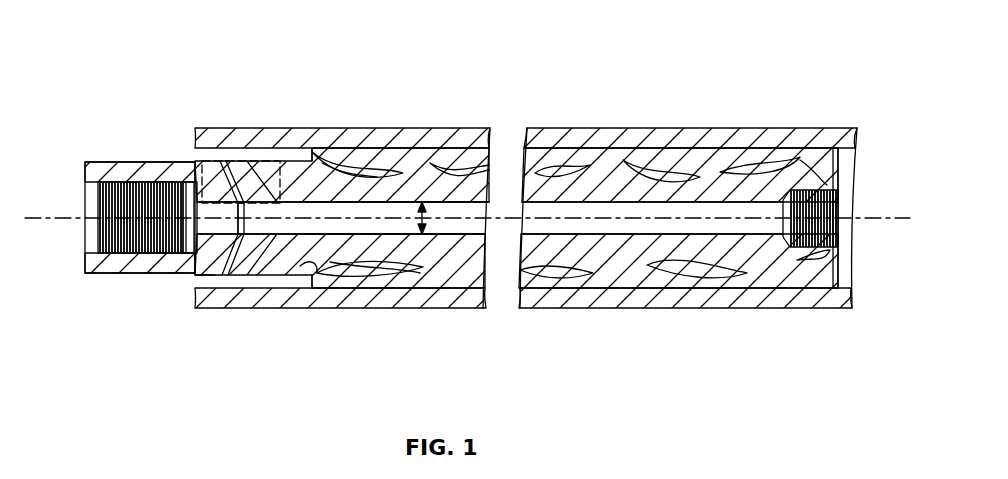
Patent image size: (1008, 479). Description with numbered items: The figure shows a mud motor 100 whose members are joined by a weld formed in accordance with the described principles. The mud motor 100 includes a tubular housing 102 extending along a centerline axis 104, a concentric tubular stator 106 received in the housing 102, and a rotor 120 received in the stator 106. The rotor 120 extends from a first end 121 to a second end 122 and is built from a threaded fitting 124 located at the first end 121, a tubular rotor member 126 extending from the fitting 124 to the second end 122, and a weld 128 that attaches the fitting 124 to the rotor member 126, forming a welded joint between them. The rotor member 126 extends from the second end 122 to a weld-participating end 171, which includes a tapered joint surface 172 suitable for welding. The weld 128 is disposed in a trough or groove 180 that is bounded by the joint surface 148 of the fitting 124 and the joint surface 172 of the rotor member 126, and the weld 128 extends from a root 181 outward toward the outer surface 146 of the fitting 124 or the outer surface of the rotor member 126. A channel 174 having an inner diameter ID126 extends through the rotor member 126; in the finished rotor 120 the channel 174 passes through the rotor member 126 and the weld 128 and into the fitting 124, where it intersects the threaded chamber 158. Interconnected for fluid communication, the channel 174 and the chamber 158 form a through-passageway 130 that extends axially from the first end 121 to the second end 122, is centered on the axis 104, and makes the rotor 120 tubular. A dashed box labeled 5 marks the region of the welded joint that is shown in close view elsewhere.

The mud motor 100 is at (118, 26).
The tubular housing 102 is at (393, 128).
The centerline axis 104 is at (712, 216).
The tubular stator 106 is at (408, 157).
The rotor 120 is at (585, 192).
The first end 121 is at (108, 162).
The second end 122 is at (826, 186).
The threaded fitting 124 is at (147, 170).
The rotor member 126 is at (653, 192).
The weld 128 is at (221, 160).
The through-passageway 130 is at (88, 238).
The outer surface 146 is at (190, 262).
The joint surface 148 is at (208, 275).
The threaded chamber 158 is at (92, 272).
The weld-participating end 171 is at (255, 250).
The tapered joint surface 172 is at (249, 260).
The channel 174 is at (368, 228).
The groove 180 is at (296, 166).
The root 181 is at (313, 265).
The section detail 5 is at (252, 160).
The inner diameter ID126 is at (428, 218).